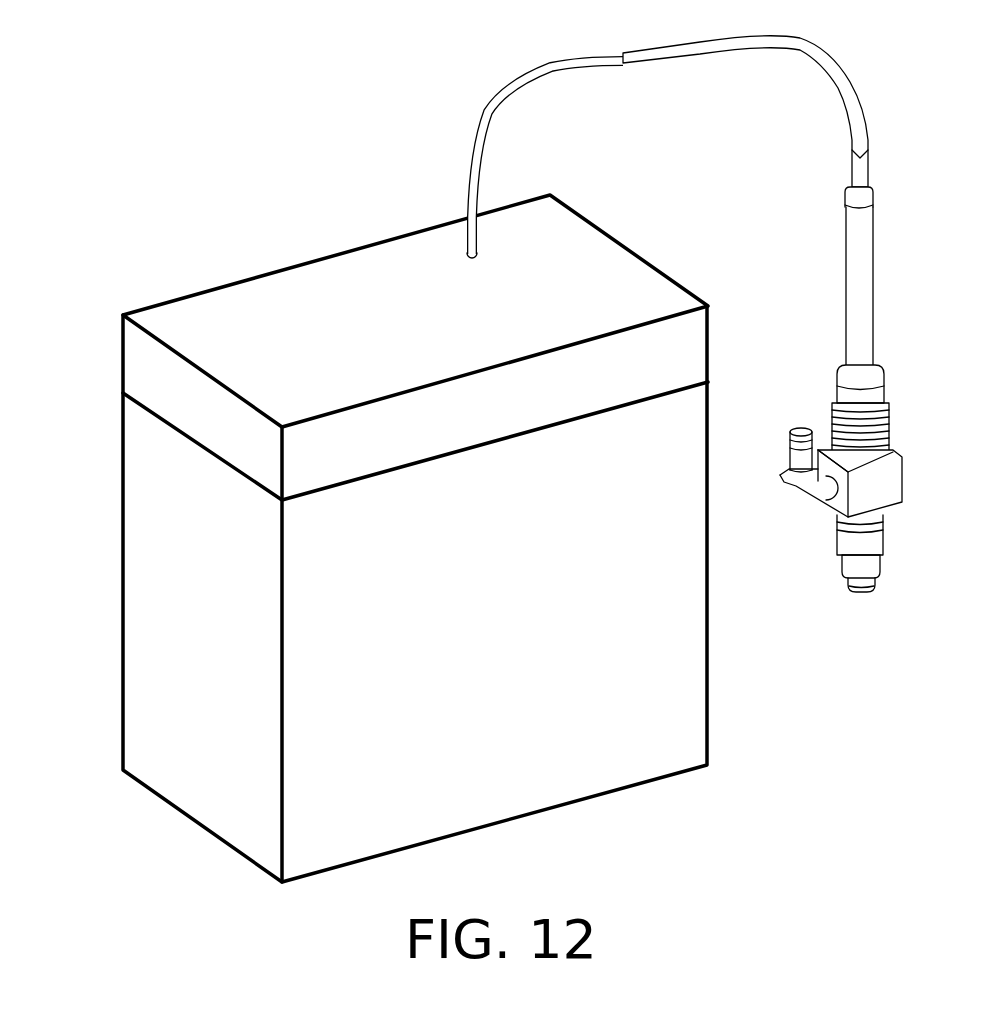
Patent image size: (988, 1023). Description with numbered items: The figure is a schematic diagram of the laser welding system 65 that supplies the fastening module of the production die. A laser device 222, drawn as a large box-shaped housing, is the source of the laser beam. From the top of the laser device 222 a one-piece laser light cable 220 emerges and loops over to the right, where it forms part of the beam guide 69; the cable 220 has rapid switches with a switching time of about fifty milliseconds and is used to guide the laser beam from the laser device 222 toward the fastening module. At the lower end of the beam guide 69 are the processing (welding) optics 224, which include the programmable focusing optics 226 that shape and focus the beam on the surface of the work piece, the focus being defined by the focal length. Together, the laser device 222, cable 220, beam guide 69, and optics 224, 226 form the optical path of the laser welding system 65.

The laser welding system 65 is at (272, 186).
The laser light cable 220 is at (863, 98).
The laser device 222 is at (148, 573).
The beam guide 69 is at (873, 335).
The processing optics 224 is at (832, 515).
The programmable focusing optics 226 is at (843, 578).